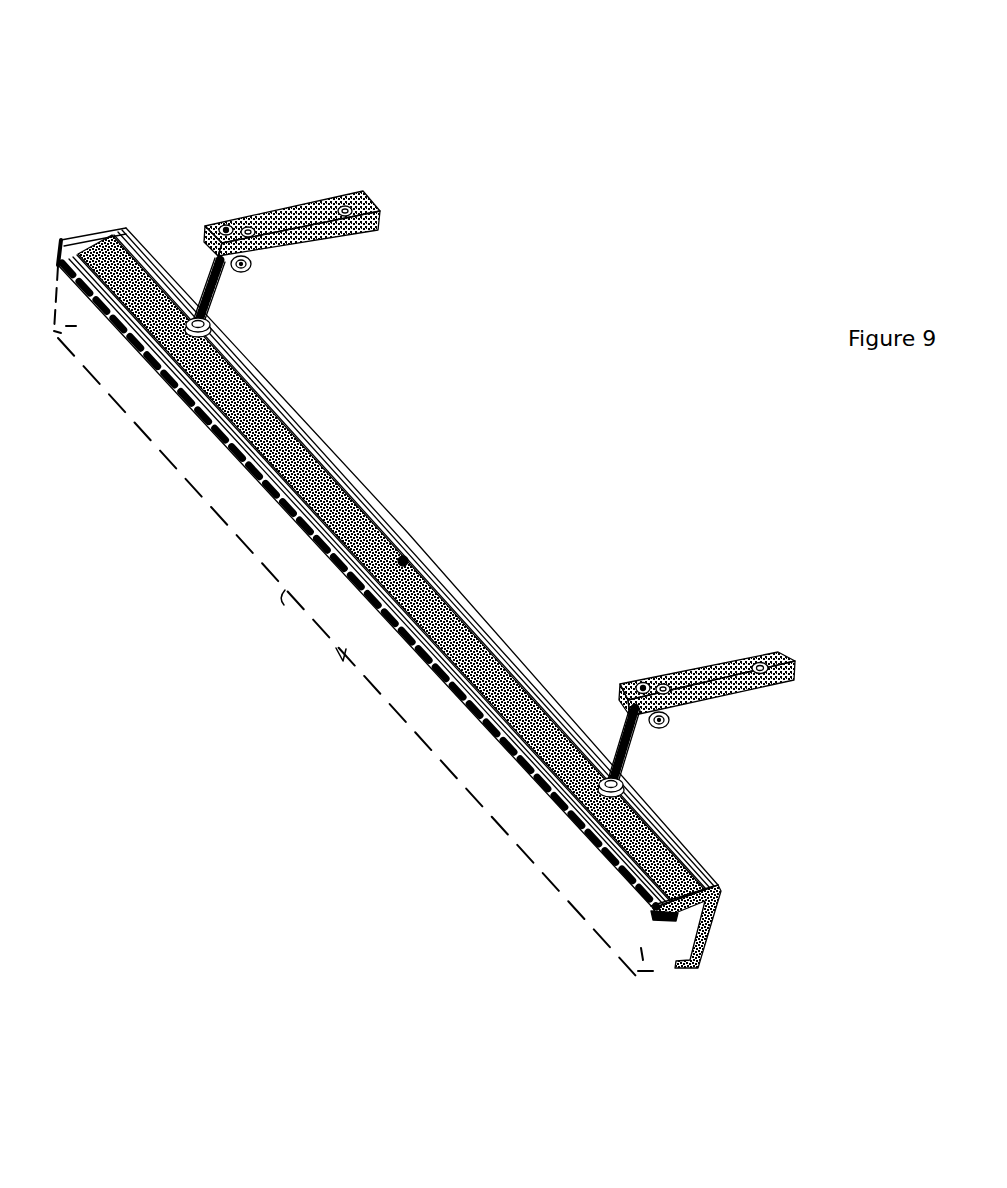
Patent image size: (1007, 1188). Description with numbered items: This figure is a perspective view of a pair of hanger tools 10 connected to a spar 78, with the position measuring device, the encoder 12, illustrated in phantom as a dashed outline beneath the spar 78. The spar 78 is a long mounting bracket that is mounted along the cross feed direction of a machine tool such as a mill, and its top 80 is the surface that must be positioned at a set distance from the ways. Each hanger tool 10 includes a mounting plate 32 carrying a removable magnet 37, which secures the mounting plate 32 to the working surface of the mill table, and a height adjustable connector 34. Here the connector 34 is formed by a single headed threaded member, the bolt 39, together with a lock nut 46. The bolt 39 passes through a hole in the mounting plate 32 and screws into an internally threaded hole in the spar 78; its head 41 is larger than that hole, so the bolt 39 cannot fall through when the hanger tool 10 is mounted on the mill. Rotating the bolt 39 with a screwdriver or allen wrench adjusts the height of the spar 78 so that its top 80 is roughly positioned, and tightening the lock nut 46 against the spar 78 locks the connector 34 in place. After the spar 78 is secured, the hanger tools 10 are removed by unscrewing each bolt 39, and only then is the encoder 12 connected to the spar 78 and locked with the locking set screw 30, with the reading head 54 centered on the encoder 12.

The hanger tool 10 is at (470, 107).
The encoder 12 is at (647, 967).
The locking set screw 30 is at (397, 552).
The mounting plate 32 is at (280, 212).
The height adjustable connector 34 is at (222, 305).
The magnet 37 is at (331, 198).
The bolt 39 is at (193, 268).
The head 41 is at (214, 215).
The lock nut 46 is at (203, 320).
The reading head 54 is at (310, 645).
The spar 78 is at (472, 606).
The top 80 is at (662, 867).